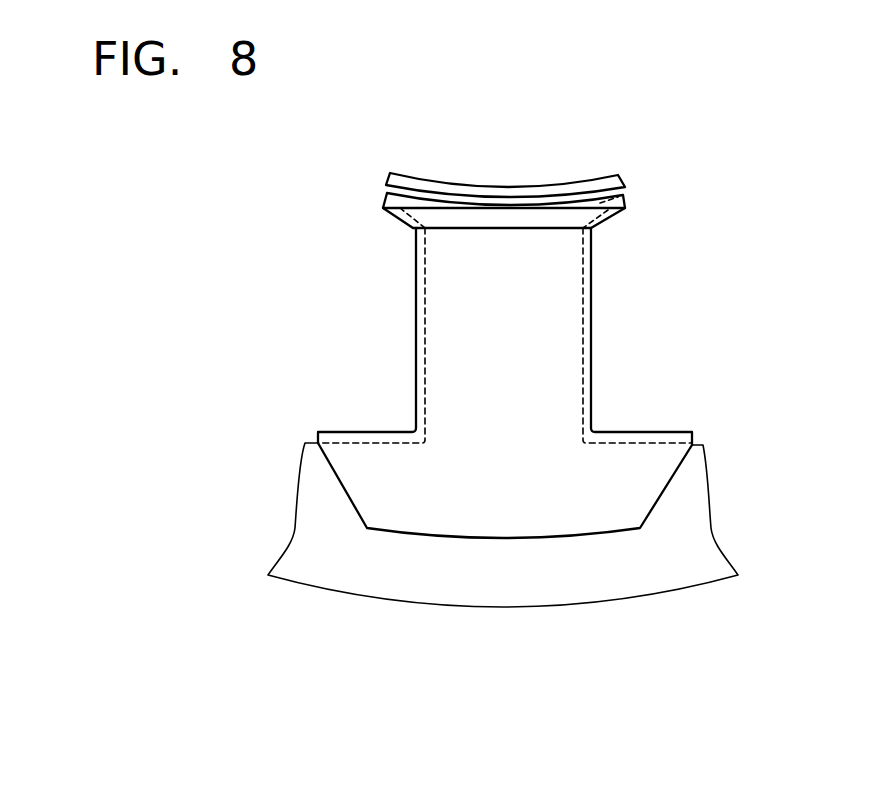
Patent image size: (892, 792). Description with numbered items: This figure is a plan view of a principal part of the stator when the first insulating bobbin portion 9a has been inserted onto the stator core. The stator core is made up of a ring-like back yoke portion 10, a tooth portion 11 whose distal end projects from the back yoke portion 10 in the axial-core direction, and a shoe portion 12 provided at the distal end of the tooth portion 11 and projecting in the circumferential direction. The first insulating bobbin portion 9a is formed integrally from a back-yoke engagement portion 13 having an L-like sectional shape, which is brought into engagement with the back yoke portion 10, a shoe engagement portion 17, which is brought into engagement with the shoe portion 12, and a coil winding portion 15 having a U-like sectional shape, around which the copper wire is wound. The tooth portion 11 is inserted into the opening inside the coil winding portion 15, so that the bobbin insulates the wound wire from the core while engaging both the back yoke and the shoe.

The first insulating bobbin portion 9a is at (458, 247).
The back yoke portion 10 is at (343, 569).
The tooth portion 11 is at (450, 306).
The shoe portion 12 is at (601, 187).
The back-yoke engagement portion 13 is at (652, 477).
The coil winding portion 15 is at (425, 368).
The shoe engagement portion 17 is at (625, 203).